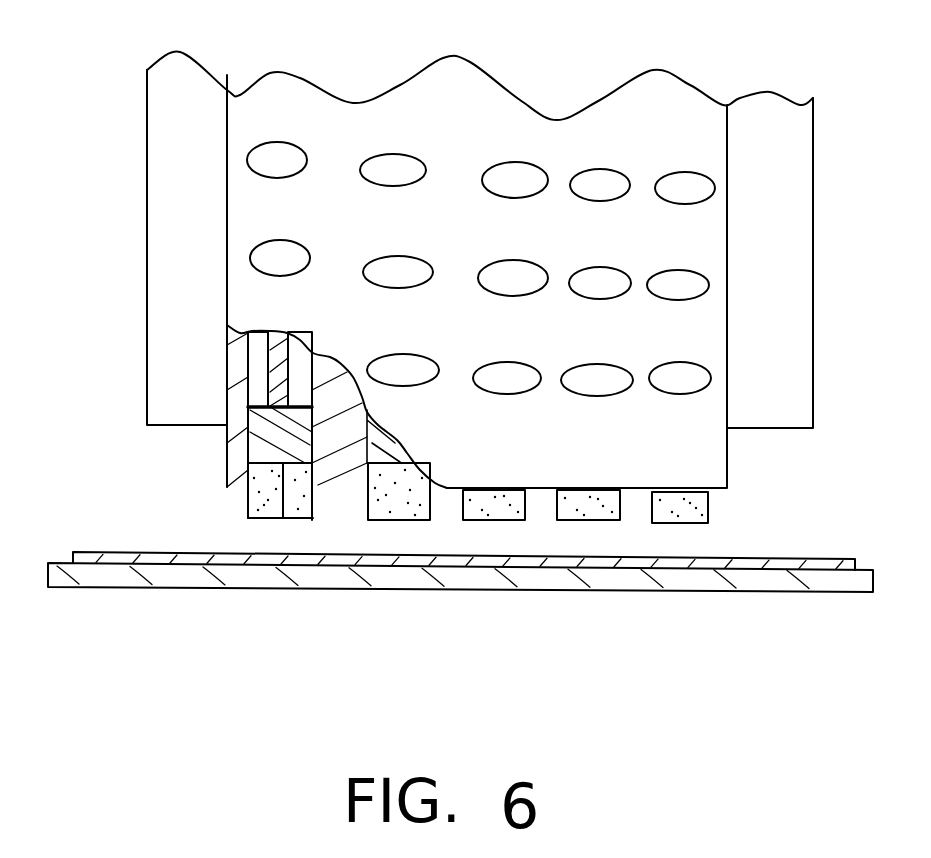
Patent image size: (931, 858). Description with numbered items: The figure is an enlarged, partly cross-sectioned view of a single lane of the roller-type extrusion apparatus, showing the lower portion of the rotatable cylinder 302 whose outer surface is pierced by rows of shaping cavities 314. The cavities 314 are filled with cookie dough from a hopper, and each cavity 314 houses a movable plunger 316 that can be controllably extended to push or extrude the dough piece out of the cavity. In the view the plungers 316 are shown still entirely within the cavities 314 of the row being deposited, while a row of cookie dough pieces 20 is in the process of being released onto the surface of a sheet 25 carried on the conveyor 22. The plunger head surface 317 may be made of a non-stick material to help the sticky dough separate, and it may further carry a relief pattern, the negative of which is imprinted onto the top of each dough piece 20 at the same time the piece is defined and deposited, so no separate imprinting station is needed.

The rotatable cylinder 302 is at (643, 117).
The shaping cavities 314 is at (305, 258).
The plunger 316 is at (262, 440).
The plunger head surface 317 is at (283, 517).
The cookie dough pieces 20 is at (253, 505).
The sheet 25 is at (765, 565).
The conveyor 22 is at (692, 582).